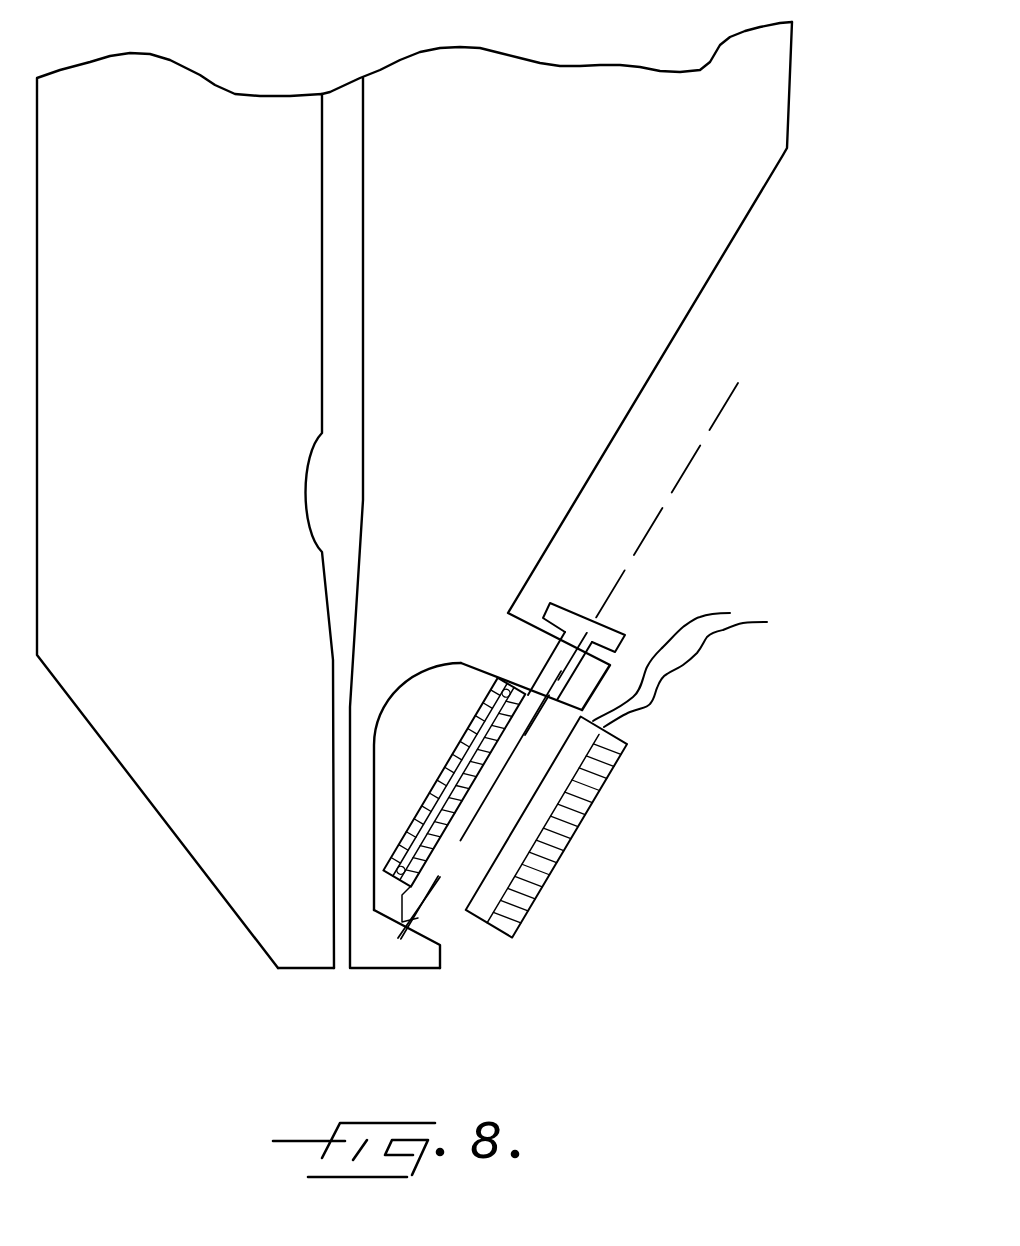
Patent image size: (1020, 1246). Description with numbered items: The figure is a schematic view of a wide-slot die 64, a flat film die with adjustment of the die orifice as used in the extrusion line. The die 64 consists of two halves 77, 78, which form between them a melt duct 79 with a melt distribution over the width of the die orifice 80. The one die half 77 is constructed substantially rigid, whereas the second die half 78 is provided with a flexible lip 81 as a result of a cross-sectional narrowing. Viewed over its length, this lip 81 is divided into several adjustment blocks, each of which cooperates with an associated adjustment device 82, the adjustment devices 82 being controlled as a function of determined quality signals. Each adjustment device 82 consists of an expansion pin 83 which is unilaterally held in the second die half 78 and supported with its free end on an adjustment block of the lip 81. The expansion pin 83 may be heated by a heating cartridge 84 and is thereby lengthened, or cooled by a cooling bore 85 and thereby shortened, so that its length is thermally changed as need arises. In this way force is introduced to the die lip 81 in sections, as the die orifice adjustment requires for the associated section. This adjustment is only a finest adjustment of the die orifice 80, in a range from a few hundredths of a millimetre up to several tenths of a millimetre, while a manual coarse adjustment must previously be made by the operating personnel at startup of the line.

The die half 77 is at (230, 120).
The second die half 78 is at (593, 102).
The melt duct 79 is at (343, 133).
The wide-slot die 64 is at (736, 181).
The adjustment devices 82 is at (662, 756).
The cooling bores 85 is at (477, 733).
The heating cartridges 84 is at (540, 825).
The expansion pins 83 is at (413, 915).
The die orifice 80 is at (344, 970).
The flexible lip 81 is at (363, 910).